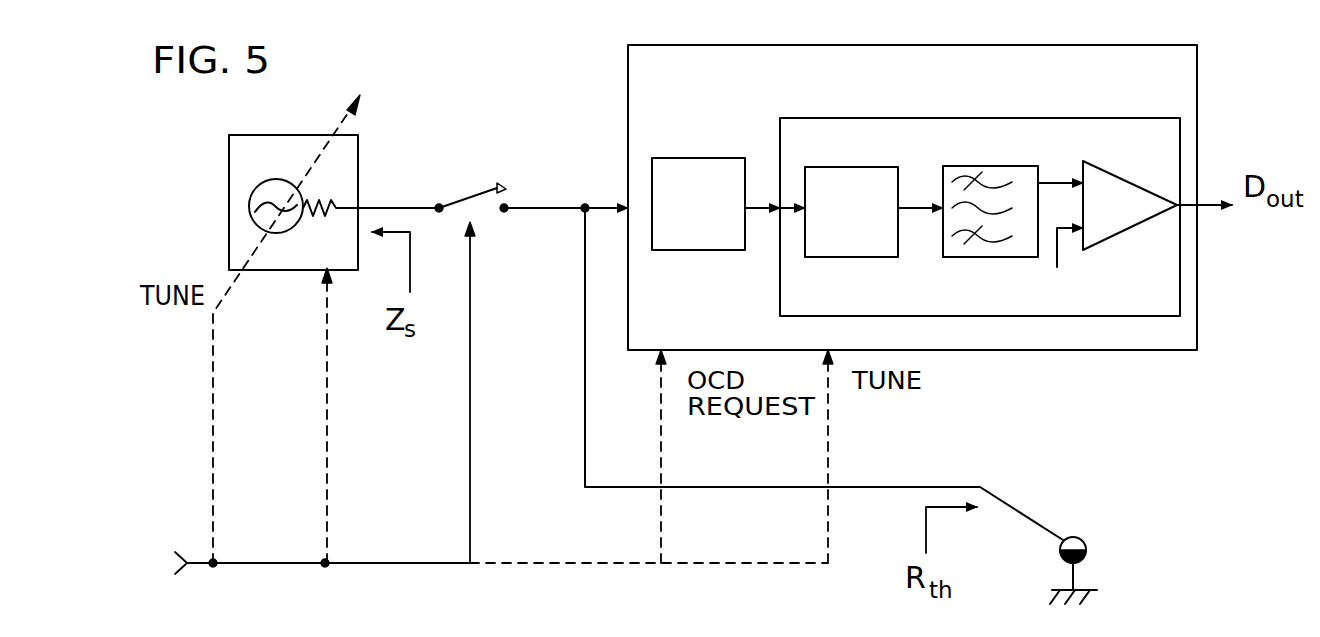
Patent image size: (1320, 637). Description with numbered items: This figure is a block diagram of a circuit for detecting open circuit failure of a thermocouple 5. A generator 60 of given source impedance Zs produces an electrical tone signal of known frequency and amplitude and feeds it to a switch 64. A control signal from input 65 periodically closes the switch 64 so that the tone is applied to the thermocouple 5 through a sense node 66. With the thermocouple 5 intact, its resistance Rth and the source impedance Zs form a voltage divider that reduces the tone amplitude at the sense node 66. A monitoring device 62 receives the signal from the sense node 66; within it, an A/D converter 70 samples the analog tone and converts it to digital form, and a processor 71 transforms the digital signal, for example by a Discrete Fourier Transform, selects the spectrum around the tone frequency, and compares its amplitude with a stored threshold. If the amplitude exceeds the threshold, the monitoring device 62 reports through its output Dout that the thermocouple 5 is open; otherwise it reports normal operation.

The generator 60 is at (298, 135).
The switch 64 is at (471, 177).
The sense node 66 is at (525, 207).
The A/D converter 70 is at (688, 158).
The processor 71 is at (925, 118).
The monitoring device 62 is at (1118, 45).
The thermocouple 5 is at (1083, 538).
The input 65 is at (370, 563).